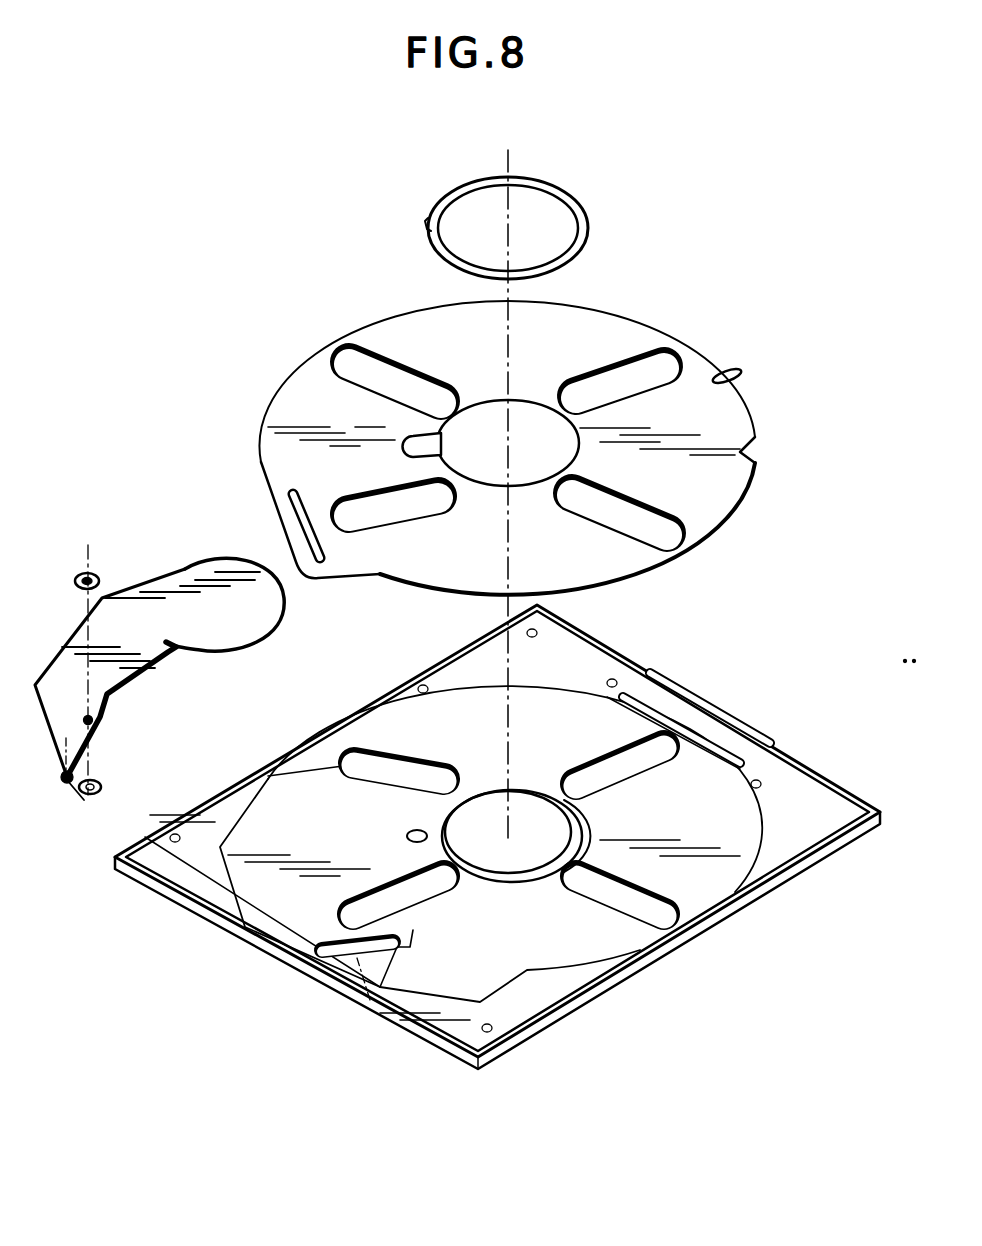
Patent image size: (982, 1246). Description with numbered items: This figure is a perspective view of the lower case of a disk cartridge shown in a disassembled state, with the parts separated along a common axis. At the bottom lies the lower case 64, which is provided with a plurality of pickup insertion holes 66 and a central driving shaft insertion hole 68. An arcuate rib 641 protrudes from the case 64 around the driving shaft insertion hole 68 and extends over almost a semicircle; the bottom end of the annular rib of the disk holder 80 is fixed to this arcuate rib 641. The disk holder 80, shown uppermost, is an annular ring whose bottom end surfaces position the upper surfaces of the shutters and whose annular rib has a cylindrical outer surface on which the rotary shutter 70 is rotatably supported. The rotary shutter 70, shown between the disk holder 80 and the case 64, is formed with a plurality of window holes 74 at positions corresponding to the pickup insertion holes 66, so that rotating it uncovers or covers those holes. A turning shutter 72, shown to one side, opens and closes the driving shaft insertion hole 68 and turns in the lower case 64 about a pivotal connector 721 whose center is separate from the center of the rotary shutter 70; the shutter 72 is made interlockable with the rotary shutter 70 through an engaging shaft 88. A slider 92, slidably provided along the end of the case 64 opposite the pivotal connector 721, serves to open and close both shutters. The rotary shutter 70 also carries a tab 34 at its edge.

The disk holder 80 is at (430, 210).
The rotary shutter 70 is at (277, 402).
The window holes 74 is at (355, 345).
The tab slot 34 is at (288, 495).
The turning shutter 72 is at (165, 578).
The engaging shaft 88 is at (100, 783).
The lower case 64 is at (790, 870).
The pickup insertion holes 66 is at (345, 755).
The driving shaft insertion hole 68 is at (485, 805).
The arcuate rib 641 is at (580, 820).
The slider 92 is at (720, 715).
The pivotal connector 721 is at (330, 990).